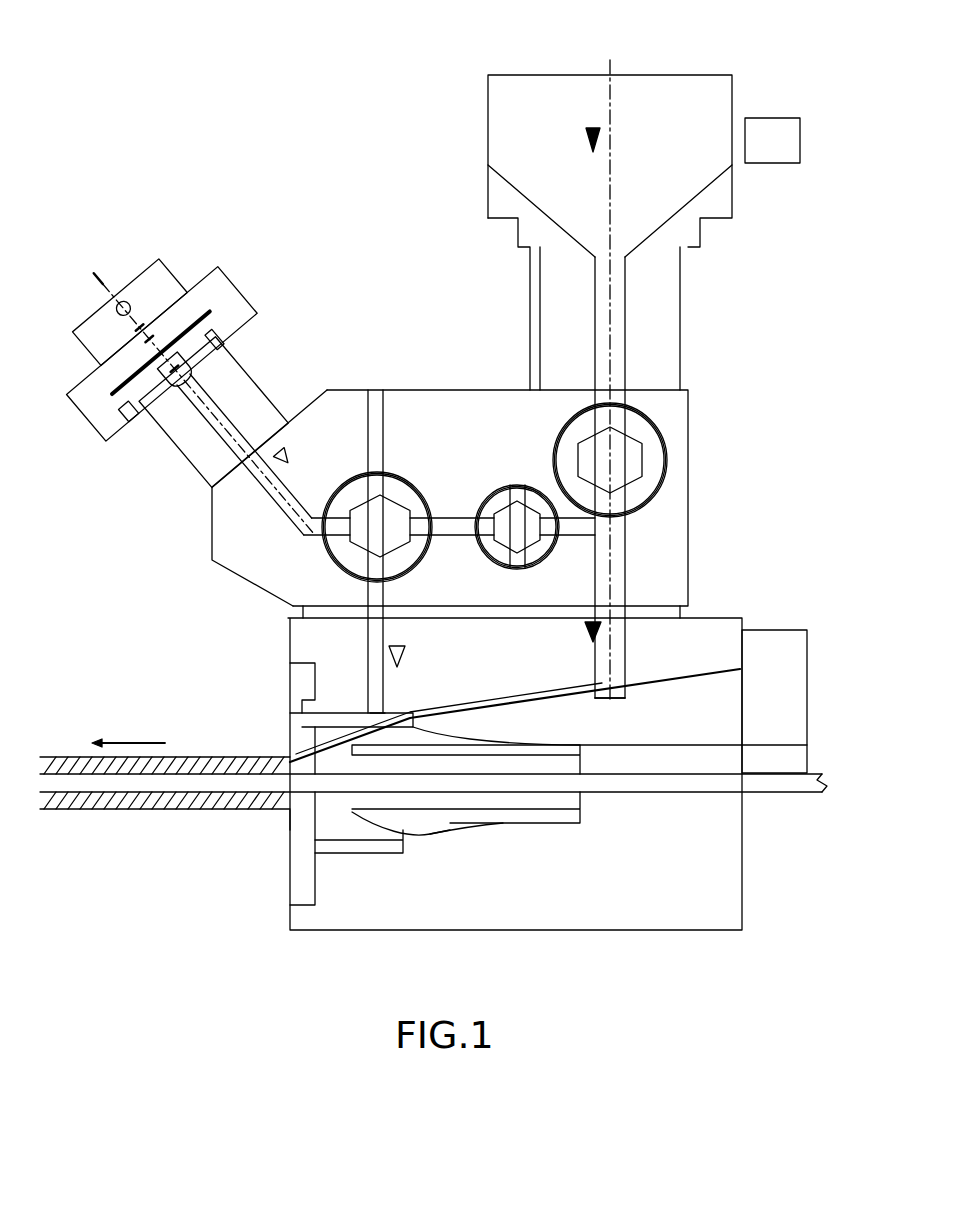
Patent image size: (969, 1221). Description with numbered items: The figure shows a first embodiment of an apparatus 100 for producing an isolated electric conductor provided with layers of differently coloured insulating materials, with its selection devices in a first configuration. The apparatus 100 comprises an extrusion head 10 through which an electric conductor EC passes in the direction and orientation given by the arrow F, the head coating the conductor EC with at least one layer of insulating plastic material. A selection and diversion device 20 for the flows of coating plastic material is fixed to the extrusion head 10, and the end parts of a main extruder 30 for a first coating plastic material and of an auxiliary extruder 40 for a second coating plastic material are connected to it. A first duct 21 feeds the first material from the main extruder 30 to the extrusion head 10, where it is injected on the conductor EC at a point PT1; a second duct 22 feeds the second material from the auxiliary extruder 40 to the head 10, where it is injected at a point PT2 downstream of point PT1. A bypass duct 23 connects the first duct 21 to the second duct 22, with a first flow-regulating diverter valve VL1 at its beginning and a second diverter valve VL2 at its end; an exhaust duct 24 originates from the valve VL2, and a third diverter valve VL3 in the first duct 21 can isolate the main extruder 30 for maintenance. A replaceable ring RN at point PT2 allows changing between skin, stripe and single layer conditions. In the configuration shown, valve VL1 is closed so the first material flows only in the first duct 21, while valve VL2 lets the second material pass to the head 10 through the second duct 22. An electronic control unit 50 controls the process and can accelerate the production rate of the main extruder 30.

The apparatus 100 is at (433, 240).
The extrusion head 10 is at (207, 829).
The selection and diversion device 20 is at (396, 384).
The first duct 21 is at (633, 528).
The second duct 22 is at (367, 640).
The bypass duct 23 is at (458, 518).
The exhaust duct 24 is at (365, 423).
The main extruder 30 is at (650, 70).
The auxiliary extruder 40 is at (129, 272).
The electronic control unit 50 is at (787, 157).
The first flow-regulating diverter valve VL1 is at (540, 555).
The second diverter valve VL2 is at (353, 555).
The third diverter valve VL3 is at (650, 457).
The arrow F is at (128, 730).
The ring RN is at (302, 818).
The first injection point PT1 is at (605, 690).
The second injection point PT2 is at (377, 715).
The electric conductor EC is at (450, 787).